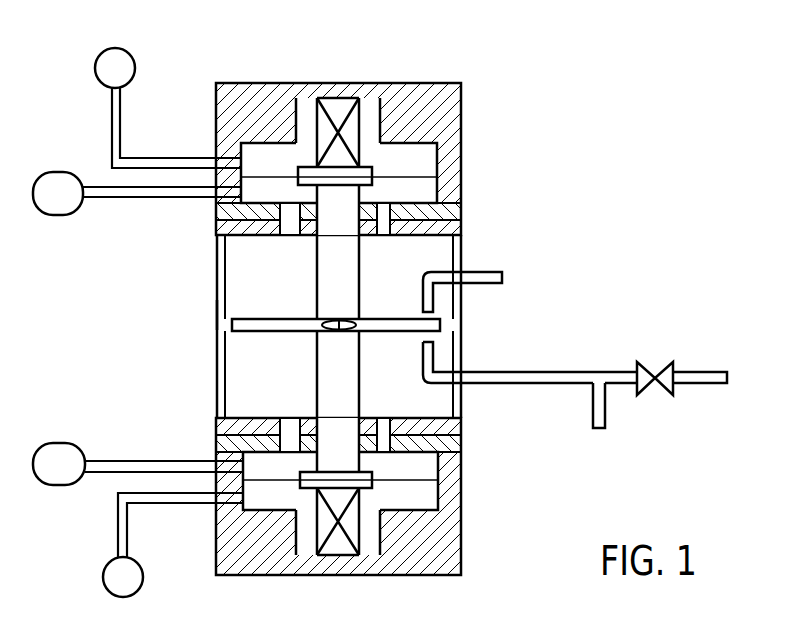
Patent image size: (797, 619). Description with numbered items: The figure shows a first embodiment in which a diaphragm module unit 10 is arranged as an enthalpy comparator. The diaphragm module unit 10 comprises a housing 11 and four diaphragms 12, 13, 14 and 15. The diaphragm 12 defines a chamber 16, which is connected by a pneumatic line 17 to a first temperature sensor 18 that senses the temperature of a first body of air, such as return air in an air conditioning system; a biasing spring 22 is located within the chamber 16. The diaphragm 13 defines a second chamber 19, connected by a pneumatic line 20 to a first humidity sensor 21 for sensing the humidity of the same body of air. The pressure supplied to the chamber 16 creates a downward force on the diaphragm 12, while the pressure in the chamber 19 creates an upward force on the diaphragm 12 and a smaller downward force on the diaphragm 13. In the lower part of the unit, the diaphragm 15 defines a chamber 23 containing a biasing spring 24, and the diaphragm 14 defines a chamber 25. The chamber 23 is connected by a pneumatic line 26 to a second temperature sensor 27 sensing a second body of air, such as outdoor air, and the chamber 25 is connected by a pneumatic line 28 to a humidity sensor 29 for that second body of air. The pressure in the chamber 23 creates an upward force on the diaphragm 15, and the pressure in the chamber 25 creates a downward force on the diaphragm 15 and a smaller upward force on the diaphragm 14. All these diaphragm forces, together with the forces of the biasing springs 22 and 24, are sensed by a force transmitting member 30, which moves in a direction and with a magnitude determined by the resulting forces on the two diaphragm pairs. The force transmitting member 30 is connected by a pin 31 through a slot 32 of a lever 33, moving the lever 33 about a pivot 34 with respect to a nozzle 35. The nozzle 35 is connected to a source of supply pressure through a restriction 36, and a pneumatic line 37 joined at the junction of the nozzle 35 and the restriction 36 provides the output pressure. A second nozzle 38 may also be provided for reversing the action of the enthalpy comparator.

The diaphragm module unit 10 is at (382, 300).
The housing 11 is at (462, 110).
The diaphragm 12 is at (418, 177).
The diaphragm 13 is at (297, 240).
The diaphragm 14 is at (300, 417).
The diaphragm 15 is at (420, 480).
The chamber 16 is at (262, 157).
The pneumatic line 17 is at (155, 157).
The first temperature sensor 18 is at (121, 48).
The second chamber 19 is at (430, 187).
The pneumatic line 20 is at (165, 199).
The first humidity sensor 21 is at (72, 170).
The biasing spring 22 is at (336, 108).
The chamber 23 is at (418, 498).
The biasing spring 24 is at (340, 544).
The chamber 25 is at (427, 463).
The pneumatic line 26 is at (183, 505).
The second temperature sensor 27 is at (108, 565).
The pneumatic line 28 is at (163, 460).
The humidity sensor 29 is at (80, 443).
The force transmitting member 30 is at (360, 256).
The pin 31 is at (347, 331).
The slot 32 is at (322, 325).
The lever 33 is at (253, 318).
The pivot 34 is at (228, 314).
The nozzle 35 is at (435, 347).
The restriction 36 is at (647, 362).
The pneumatic line 37 is at (592, 407).
The second nozzle 38 is at (487, 271).